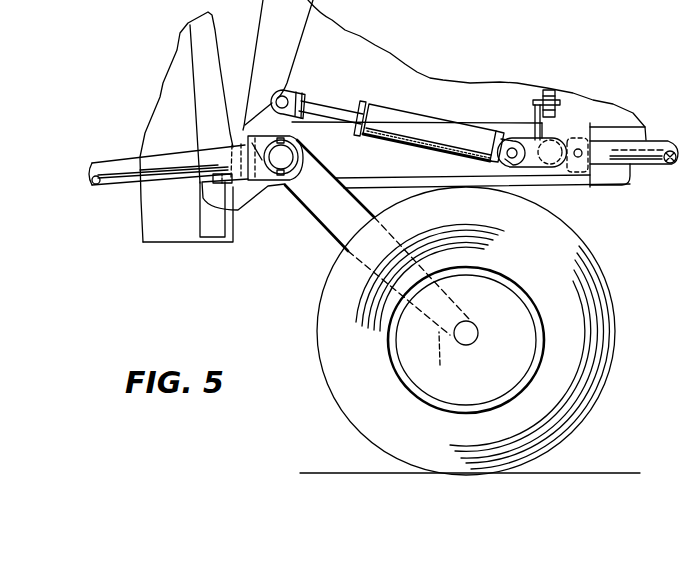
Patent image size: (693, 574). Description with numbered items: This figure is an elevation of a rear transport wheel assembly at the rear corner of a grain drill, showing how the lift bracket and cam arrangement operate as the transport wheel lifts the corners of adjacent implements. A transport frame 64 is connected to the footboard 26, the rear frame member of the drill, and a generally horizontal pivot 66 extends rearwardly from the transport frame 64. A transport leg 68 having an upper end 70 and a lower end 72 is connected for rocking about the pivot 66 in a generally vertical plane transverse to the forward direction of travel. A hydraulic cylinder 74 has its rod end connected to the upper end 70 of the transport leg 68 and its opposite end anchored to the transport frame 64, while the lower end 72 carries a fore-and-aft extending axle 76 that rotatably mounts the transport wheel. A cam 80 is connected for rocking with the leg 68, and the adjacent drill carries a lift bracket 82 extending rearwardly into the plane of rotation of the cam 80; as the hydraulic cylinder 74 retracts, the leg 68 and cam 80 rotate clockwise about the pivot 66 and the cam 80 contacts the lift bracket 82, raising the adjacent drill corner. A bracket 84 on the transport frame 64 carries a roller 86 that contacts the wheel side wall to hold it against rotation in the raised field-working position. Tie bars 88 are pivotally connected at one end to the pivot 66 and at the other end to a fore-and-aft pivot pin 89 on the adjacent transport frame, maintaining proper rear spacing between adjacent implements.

The footboard 26 is at (620, 125).
The transport frame 64 is at (332, 137).
The pivot 66 is at (283, 182).
The transport leg 68 is at (332, 234).
The upper end of transport leg 70 is at (308, 163).
The lower end of transport leg 72 is at (439, 360).
The hydraulic cylinder 74 is at (437, 130).
The axle 76 is at (473, 333).
The cam 80 is at (245, 192).
The lift bracket 82 is at (205, 185).
The bracket 84 is at (531, 118).
The roller 86 is at (549, 90).
The tie bars 88 is at (122, 167).
The pivot pin 89 is at (580, 156).